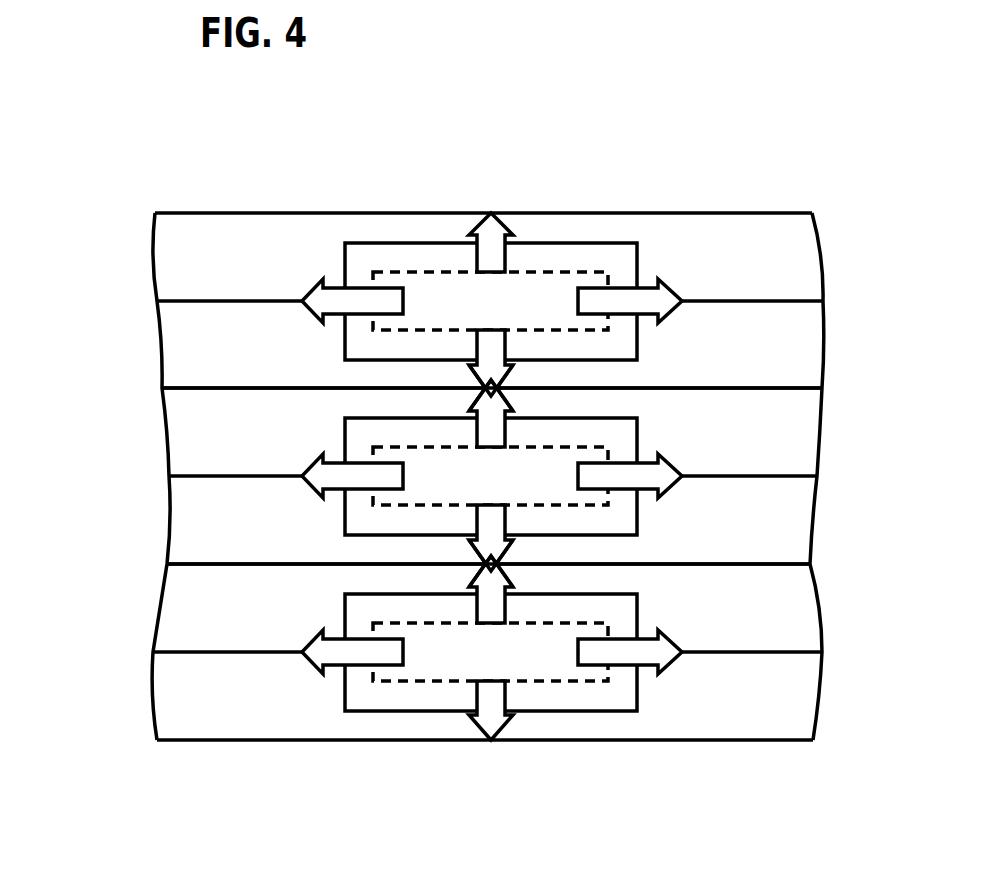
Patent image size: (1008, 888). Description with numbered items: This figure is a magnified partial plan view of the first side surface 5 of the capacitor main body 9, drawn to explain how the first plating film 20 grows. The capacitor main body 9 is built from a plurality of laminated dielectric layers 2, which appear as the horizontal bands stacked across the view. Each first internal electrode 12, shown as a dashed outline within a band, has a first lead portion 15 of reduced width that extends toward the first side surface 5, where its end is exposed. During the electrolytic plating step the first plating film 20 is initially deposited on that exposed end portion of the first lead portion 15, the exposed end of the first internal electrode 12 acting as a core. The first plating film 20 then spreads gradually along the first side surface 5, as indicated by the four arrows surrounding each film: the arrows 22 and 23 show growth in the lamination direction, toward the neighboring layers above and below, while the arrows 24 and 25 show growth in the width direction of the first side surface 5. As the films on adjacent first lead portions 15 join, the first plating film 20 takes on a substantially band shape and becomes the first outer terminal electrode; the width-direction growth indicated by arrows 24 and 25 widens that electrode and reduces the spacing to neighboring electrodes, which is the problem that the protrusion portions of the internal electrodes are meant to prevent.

The dielectric layer 2 is at (183, 353).
The first side surface 5 is at (800, 243).
The capacitor main body 9 is at (173, 206).
The first internal electrode 12 is at (406, 258).
The first lead portion 15 is at (541, 298).
The first plating film 20 is at (621, 250).
The arrow 22 is at (490, 608).
The arrow 23 is at (497, 693).
The arrow 24 is at (333, 662).
The arrow 25 is at (648, 662).